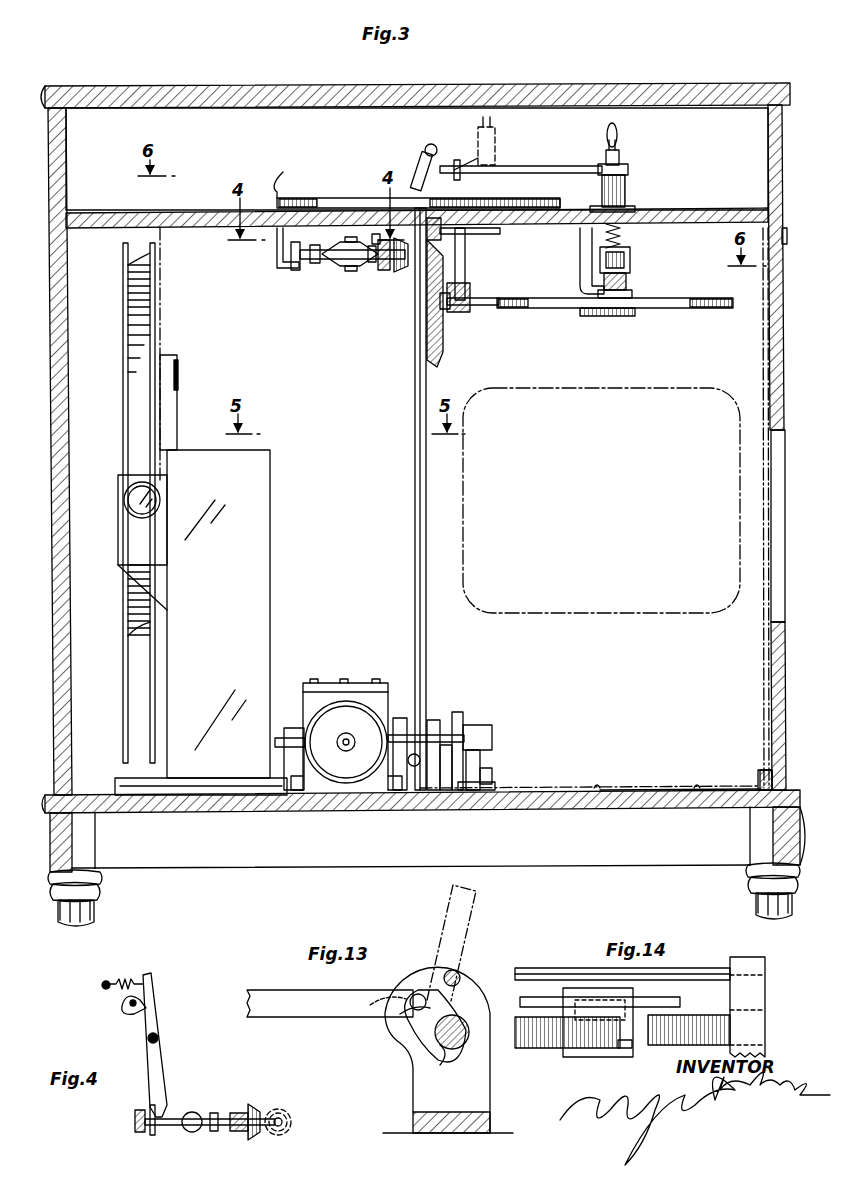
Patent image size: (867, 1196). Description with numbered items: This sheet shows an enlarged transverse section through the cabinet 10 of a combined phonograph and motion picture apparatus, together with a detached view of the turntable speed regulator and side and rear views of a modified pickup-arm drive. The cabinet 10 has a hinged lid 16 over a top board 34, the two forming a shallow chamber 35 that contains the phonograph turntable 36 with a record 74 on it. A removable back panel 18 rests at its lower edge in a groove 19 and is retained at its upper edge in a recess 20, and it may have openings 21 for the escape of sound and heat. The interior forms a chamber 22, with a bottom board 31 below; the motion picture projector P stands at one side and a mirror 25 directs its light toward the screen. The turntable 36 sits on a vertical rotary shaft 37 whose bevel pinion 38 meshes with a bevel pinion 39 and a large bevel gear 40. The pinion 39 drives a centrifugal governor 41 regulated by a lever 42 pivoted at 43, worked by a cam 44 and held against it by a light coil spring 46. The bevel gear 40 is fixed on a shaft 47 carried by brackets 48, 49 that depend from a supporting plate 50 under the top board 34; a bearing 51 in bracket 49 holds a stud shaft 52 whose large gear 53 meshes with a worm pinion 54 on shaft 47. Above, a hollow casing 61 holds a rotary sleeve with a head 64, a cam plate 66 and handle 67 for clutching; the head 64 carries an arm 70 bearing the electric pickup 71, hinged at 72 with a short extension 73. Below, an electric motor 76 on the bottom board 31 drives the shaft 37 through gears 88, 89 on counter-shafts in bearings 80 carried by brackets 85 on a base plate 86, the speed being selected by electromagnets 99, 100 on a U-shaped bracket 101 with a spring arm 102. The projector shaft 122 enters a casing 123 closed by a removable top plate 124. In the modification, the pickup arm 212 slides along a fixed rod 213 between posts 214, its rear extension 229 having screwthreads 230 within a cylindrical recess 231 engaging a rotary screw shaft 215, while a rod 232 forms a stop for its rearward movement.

In FIG. 3, the cabinet 10 is at (116, 853).
In FIG. 3, the hinged lid 16 is at (534, 84).
In FIG. 3, the panel 18 is at (785, 670).
In FIG. 3, the groove 19 is at (791, 766).
In FIG. 3, the recess 20 is at (785, 242).
In FIG. 3, the openings 21 is at (784, 568).
In FIG. 3, the chamber 22 is at (742, 784).
In FIG. 3, the mirror 25 is at (160, 296).
In FIG. 3, the bottom board 31 is at (606, 784).
In FIG. 3, the top board 34 is at (690, 210).
In FIG. 3, the shallow chamber 35 is at (716, 124).
In FIG. 3, the phonograph turntable 36 is at (280, 198).
In FIG. 3, the vertical rotary shaft 37 is at (415, 459).
In FIG. 4, the vertical rotary shaft 37 is at (280, 1117).
In FIG. 3, the bevel pinion 38 is at (410, 272).
In FIG. 4, the bevel pinion 38 is at (290, 1114).
In FIG. 3, the bevel pinion 39 is at (396, 272).
In FIG. 4, the bevel pinion 39 is at (254, 1102).
In FIG. 3, the large bevel gear 40 is at (444, 344).
In FIG. 3, the centrifugal governor 41 is at (334, 270).
In FIG. 4, the centrifugal governor 41 is at (206, 1110).
In FIG. 4, the lever 42 is at (160, 1062).
In FIG. 4, the pivot 43 is at (158, 1034).
In FIG. 4, the cam 44 is at (130, 1014).
In FIG. 4, the light coil spring 46 is at (114, 982).
In FIG. 3, the shaft 47 is at (482, 300).
In FIG. 3, the bracket 48 is at (465, 244).
In FIG. 3, the bracket 49 is at (580, 262).
In FIG. 3, the supporting plate 50 is at (534, 227).
In FIG. 3, the bearing 51 is at (624, 264).
In FIG. 3, the stud shaft 52 is at (630, 278).
In FIG. 3, the large gear 53 is at (676, 308).
In FIG. 3, the worm pinion 54 is at (612, 316).
In FIG. 3, the hollow casing 61 is at (626, 187).
In FIG. 3, the head 64 is at (628, 168).
In FIG. 3, the cam plate 66 is at (628, 148).
In FIG. 3, the handle 67 is at (616, 132).
In FIG. 3, the arm 70 is at (576, 166).
In FIG. 3, the electric pickup 71 is at (418, 160).
In FIG. 3, the hinged connection 72 is at (456, 160).
In FIG. 3, the short extension 73 is at (435, 144).
In FIG. 3, the record 74 is at (334, 198).
In FIG. 3, the electric motor 76 is at (346, 722).
In FIG. 3, the bearings 80 is at (492, 728).
In FIG. 3, the brackets 85 is at (480, 748).
In FIG. 3, the base plate 86 is at (496, 784).
In FIG. 3, the large gear wheel 88 is at (398, 718).
In FIG. 3, the gear wheel 89 is at (464, 710).
In FIG. 3, the electromagnet 99 is at (454, 728).
In FIG. 3, the electromagnet 100 is at (436, 720).
In FIG. 3, the U-shaped bracket 101 is at (486, 784).
In FIG. 3, the spring arm 102 is at (410, 762).
In FIG. 3, the projector shaft 122 is at (282, 738).
In FIG. 3, the casing 123 is at (326, 682).
In FIG. 3, the removable top plate 124 is at (338, 692).
In FIG. 13, the pickup arm 212 is at (268, 998).
In FIG. 13, the fixed rod 213 is at (412, 1010).
In FIG. 14, the fixed rod 213 is at (538, 998).
In FIG. 13, the post 214 is at (475, 1090).
In FIG. 14, the post 214 is at (748, 992).
In FIG. 13, the rotary screw shaft 215 is at (452, 1016).
In FIG. 14, the rotary screw shaft 215 is at (712, 1004).
In FIG. 13, the rear extension 229 is at (360, 1004).
In FIG. 14, the rear extension 229 is at (576, 990).
In FIG. 14, the screwthreads 230 is at (590, 1048).
In FIG. 13, the cylindrical recess 231 is at (362, 1016).
In FIG. 14, the cylindrical recess 231 is at (622, 1054).
In FIG. 13, the rod 232 is at (454, 972).
In FIG. 14, the rod 232 is at (704, 968).
In FIG. 3, the motion picture projector P is at (271, 496).